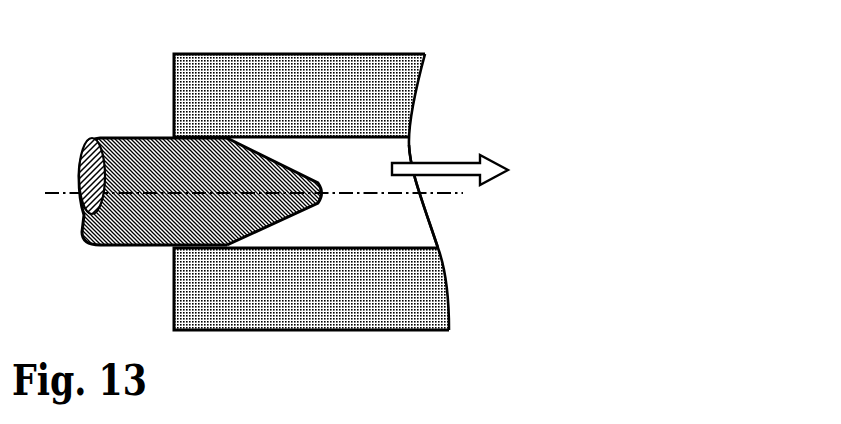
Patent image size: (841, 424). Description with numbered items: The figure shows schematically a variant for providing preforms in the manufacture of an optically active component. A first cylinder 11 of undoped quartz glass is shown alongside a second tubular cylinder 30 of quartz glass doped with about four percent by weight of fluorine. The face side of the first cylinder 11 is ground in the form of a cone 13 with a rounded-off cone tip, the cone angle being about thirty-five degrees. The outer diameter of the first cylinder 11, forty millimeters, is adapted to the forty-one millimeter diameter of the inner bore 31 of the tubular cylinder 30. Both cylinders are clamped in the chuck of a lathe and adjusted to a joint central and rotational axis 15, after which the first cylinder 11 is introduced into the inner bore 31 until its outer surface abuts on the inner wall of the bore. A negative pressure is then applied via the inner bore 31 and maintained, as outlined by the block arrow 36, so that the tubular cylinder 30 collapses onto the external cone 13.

The first cylinder 11 is at (152, 170).
The cone 13 is at (258, 205).
The central and rotational axis 15 is at (458, 194).
The second tubular cylinder 30 is at (313, 79).
The inner bore 31 is at (382, 176).
The block arrow 36 is at (460, 168).